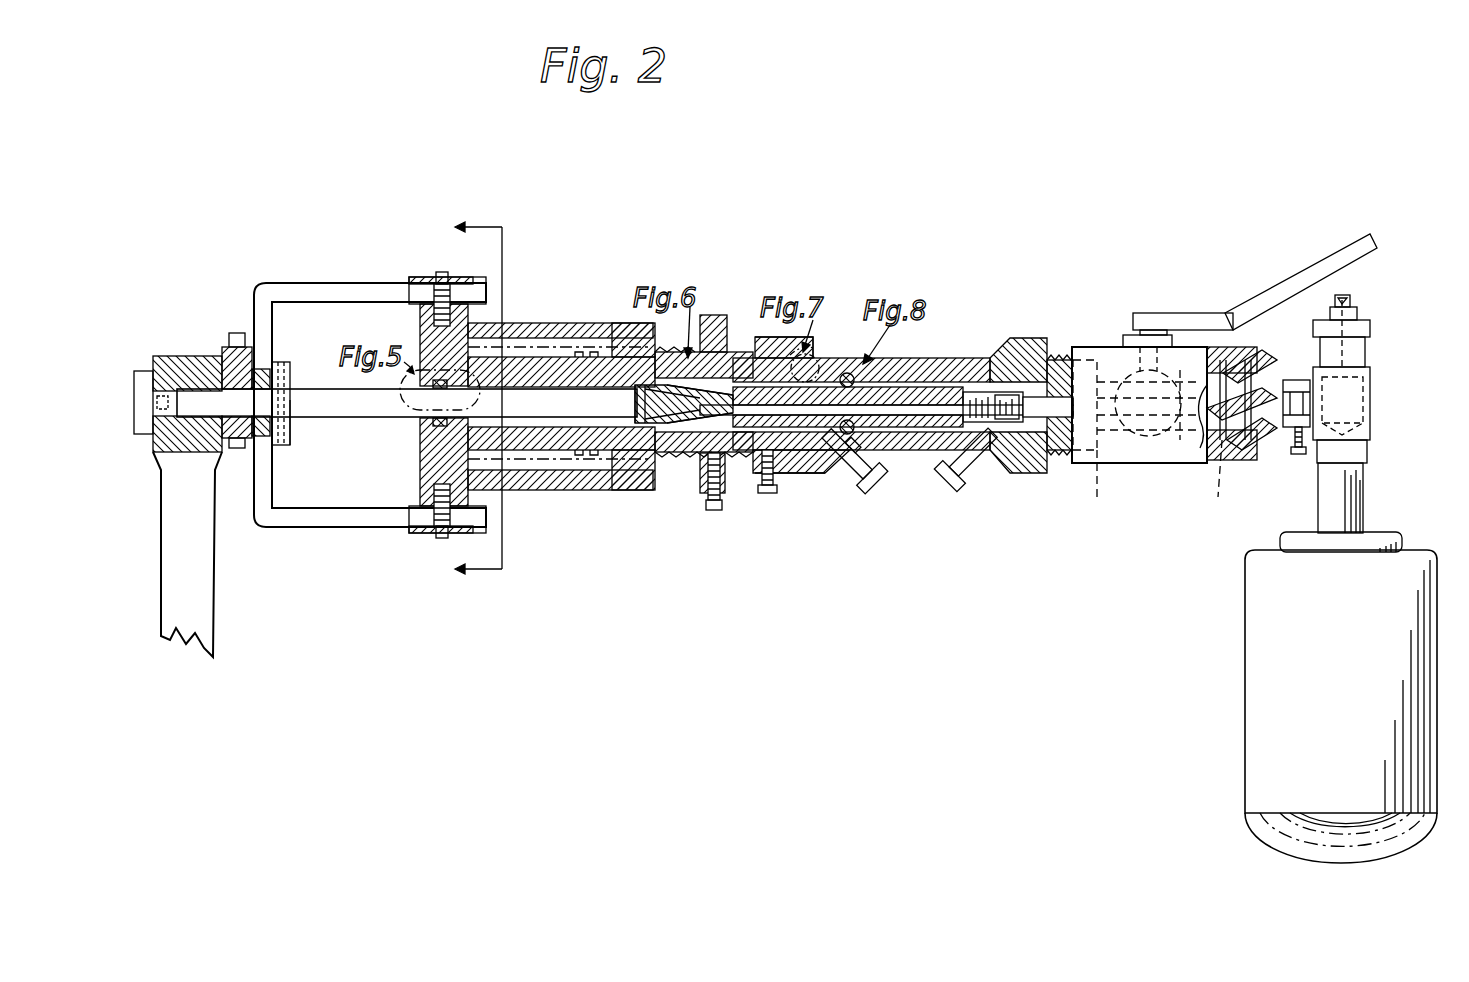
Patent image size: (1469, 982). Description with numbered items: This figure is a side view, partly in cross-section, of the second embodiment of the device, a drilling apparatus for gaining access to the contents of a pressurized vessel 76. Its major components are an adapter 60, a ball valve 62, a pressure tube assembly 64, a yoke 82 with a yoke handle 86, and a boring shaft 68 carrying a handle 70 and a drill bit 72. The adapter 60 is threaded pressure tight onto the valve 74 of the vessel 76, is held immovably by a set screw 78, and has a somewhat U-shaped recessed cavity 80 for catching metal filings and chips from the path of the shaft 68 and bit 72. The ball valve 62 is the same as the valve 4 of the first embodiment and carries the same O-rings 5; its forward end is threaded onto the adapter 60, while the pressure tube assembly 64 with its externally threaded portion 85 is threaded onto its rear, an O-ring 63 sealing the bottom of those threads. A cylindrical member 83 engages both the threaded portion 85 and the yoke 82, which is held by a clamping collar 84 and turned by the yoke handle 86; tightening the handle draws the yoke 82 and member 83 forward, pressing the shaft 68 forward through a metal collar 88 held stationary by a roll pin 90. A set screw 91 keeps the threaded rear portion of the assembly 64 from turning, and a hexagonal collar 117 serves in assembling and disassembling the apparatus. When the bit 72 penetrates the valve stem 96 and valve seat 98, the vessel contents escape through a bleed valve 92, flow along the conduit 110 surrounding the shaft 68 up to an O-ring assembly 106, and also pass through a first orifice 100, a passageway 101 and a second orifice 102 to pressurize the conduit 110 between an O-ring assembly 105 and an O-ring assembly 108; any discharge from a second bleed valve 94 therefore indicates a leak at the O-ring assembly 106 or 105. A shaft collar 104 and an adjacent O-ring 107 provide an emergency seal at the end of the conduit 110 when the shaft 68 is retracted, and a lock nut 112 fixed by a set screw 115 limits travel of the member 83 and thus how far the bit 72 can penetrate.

The valve 4 is at (466, 394).
The O-rings 5 is at (1149, 441).
The adapter 60 is at (1267, 353).
The ball valve 62 is at (1123, 347).
The O-ring 63 is at (850, 350).
The pressure tube assembly 64 is at (795, 475).
The boring shaft 68 is at (897, 397).
The handle 70 is at (204, 566).
The drill bit 72 is at (1203, 440).
The valve 74 is at (1300, 380).
The vessel 76 is at (1268, 622).
The set screw 78 is at (1298, 454).
The recessed cavity 80 is at (1247, 453).
The yoke 82 is at (375, 520).
The cylindrical member 83 is at (530, 327).
The clamping collar 84 is at (220, 356).
The externally threaded portion 85 is at (577, 352).
The yoke handle 86 is at (407, 283).
The metal collar 88 is at (290, 362).
The roll pin 90 is at (291, 432).
The set screw 91 is at (765, 495).
The bleed valve 92 is at (966, 487).
The bleed valve 94 is at (862, 487).
The valve stem 96 is at (1355, 387).
The valve seat 98 is at (1355, 423).
The first orifice 100 is at (950, 410).
The passageway 101 is at (912, 412).
The second orifice 102 is at (668, 350).
The shaft collar 104 is at (680, 455).
The O-ring assembly 105 is at (700, 455).
The O-ring assembly 106 is at (845, 372).
The O-ring 107 is at (660, 480).
The O-ring assembly 108 is at (430, 424).
The conduit 110 is at (953, 387).
The lock nut 112 is at (713, 327).
The set screw 115 is at (711, 500).
The hexagonal collar 117 is at (740, 350).